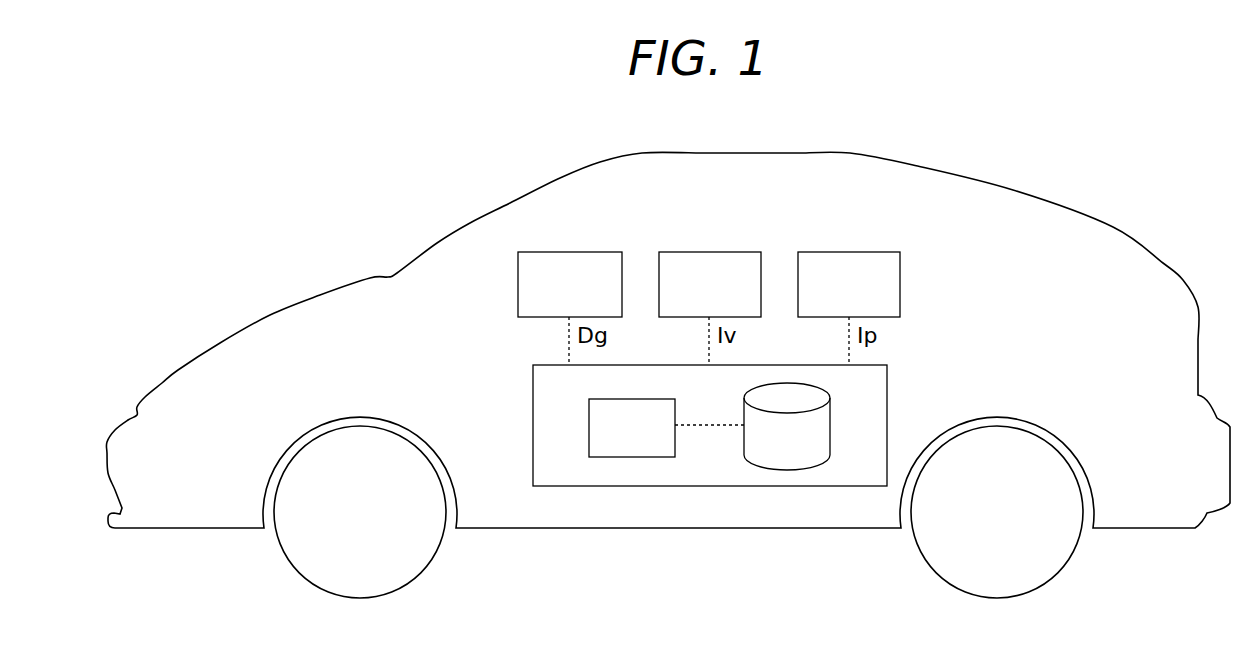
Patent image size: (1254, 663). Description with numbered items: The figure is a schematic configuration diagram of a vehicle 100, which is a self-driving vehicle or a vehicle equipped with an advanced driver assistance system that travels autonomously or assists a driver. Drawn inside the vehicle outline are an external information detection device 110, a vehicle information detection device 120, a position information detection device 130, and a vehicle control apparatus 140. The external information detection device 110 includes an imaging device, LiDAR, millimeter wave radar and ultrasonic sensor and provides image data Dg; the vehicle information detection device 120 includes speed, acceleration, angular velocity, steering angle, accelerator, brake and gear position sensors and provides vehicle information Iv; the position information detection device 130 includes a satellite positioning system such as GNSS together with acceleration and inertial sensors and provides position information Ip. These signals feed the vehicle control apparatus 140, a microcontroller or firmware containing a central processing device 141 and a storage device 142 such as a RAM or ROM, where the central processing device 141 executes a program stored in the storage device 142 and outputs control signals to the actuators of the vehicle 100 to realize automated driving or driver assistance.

The vehicle 100 is at (1111, 227).
The external information detection device 110 is at (605, 250).
The vehicle information detection device 120 is at (731, 250).
The position information detection device 130 is at (889, 250).
The vehicle control apparatus 140 is at (888, 395).
The central processing device 141 is at (633, 458).
The storage device 142 is at (788, 470).